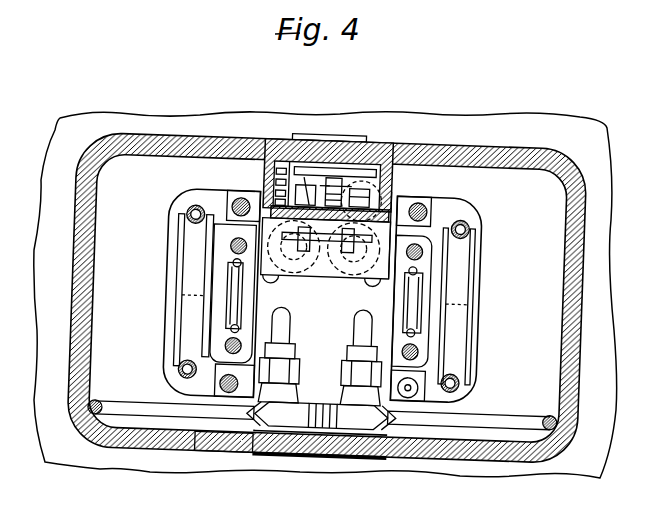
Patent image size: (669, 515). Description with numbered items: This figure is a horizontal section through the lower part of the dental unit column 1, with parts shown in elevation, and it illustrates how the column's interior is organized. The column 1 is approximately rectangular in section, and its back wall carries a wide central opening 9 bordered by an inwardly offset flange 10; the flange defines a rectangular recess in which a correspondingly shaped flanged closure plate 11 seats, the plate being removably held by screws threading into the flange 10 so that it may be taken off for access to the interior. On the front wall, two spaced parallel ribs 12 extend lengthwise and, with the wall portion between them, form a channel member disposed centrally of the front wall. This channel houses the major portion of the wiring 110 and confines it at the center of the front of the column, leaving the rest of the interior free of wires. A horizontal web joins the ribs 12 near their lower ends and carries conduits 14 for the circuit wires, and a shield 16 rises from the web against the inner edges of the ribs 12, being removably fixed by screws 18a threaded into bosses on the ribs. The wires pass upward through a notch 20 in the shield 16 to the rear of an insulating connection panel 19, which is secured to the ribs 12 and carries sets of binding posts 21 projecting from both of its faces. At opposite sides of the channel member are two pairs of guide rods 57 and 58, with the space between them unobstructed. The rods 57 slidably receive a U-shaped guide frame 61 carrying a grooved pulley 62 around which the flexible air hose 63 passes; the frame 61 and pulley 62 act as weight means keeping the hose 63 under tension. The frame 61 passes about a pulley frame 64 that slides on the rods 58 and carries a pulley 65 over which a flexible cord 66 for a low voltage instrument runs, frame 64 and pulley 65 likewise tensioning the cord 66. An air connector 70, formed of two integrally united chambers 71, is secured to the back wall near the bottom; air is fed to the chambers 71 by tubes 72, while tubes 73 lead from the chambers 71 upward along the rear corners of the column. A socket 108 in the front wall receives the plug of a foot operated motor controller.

The column 1 is at (592, 283).
The opening 9 is at (212, 438).
The inwardly offset flange 10 is at (452, 455).
The closure plate 11 is at (248, 449).
The ribs 12 is at (263, 148).
The conduits 14 is at (285, 160).
The shield 16 is at (346, 260).
The screws 18a is at (372, 283).
The connection panel 19 is at (318, 188).
The notch 20 is at (338, 192).
The binding posts 21 is at (300, 190).
The guide rods 57 is at (238, 204).
The guide rods 58 is at (234, 242).
The guide frame 61 is at (182, 200).
The pulley 62 is at (180, 248).
The air hose 63 is at (184, 219).
The pulley frame 64 is at (233, 306).
The pulley 65 is at (228, 292).
The cord 66 is at (231, 266).
The air connector 70 is at (331, 457).
The chambers 71 is at (286, 428).
The tubes 72 is at (354, 323).
The tubes 73 is at (110, 410).
The socket 108 is at (350, 172).
The wiring 110 is at (400, 193).